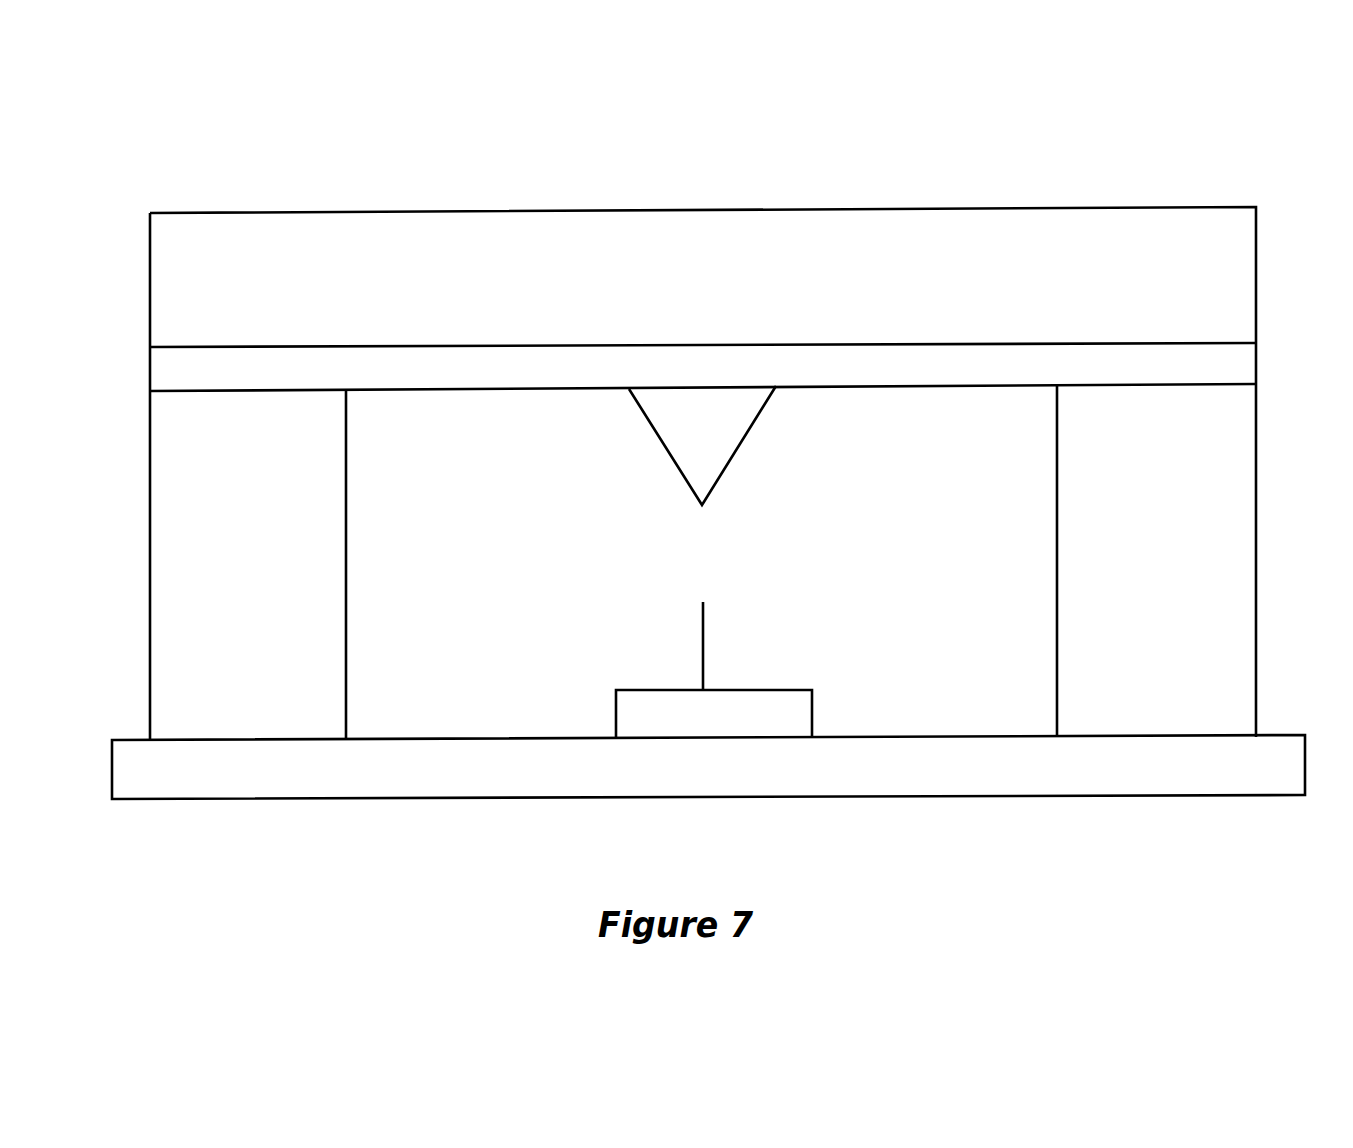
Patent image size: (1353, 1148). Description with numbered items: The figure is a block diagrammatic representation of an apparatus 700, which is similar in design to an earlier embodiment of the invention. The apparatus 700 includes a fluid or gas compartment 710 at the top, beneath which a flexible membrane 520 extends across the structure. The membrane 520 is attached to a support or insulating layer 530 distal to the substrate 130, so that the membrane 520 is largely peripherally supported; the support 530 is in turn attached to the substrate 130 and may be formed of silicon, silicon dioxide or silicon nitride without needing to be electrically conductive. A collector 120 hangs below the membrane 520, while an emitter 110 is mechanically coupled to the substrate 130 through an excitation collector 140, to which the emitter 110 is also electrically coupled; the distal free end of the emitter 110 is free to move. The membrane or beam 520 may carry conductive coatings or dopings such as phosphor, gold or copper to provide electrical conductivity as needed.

The apparatus 700 is at (178, 158).
The fluid or gas compartment 710 is at (703, 304).
The flexible membrane 520 is at (703, 371).
The collector 120 is at (702, 445).
The support or insulating layer 530 is at (701, 562).
The emitter 110 is at (684, 643).
The excitation collector 140 is at (714, 714).
The substrate 130 is at (708, 767).